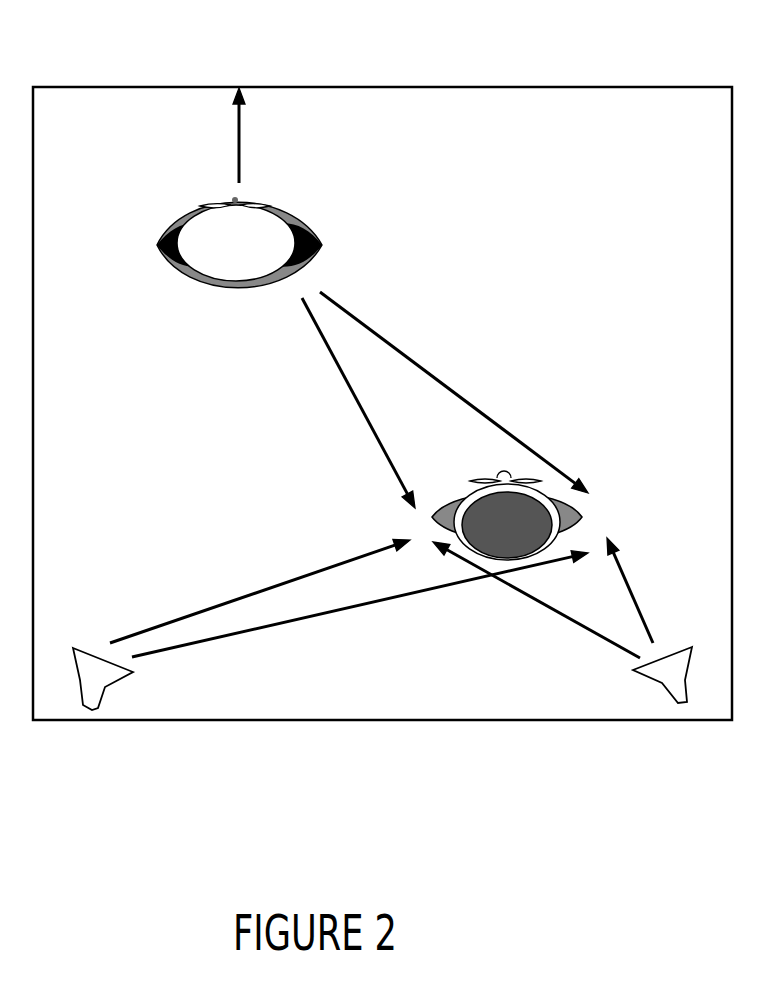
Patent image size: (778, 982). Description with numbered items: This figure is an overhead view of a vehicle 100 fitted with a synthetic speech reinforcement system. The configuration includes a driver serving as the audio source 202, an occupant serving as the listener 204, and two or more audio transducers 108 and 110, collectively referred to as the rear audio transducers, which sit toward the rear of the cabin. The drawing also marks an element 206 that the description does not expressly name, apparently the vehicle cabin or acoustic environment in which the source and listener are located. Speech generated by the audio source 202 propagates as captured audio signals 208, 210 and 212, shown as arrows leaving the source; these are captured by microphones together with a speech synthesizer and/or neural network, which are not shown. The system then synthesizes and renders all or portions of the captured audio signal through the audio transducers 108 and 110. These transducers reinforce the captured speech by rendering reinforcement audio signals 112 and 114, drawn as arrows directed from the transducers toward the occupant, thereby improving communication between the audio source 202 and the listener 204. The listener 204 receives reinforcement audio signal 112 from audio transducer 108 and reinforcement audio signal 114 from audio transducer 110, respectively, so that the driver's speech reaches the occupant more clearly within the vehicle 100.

The vehicle 100 is at (480, 74).
The audio transducer 108 is at (85, 660).
The audio transducer 110 is at (675, 654).
The reinforcement audio signal 112 is at (349, 609).
The reinforcement audio signal 114 is at (571, 598).
The audio source 202 is at (208, 235).
The listener 204 is at (495, 501).
The field of view 206 is at (663, 170).
The audio signal 208 is at (202, 135).
The audio signal 210 is at (358, 403).
The audio signal 212 is at (454, 392).